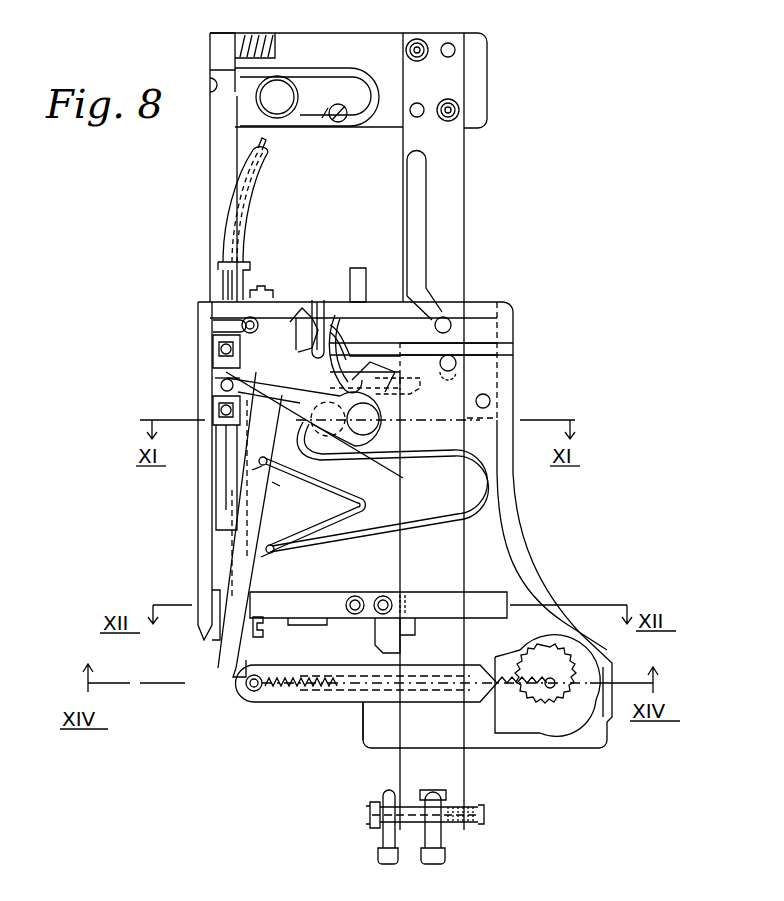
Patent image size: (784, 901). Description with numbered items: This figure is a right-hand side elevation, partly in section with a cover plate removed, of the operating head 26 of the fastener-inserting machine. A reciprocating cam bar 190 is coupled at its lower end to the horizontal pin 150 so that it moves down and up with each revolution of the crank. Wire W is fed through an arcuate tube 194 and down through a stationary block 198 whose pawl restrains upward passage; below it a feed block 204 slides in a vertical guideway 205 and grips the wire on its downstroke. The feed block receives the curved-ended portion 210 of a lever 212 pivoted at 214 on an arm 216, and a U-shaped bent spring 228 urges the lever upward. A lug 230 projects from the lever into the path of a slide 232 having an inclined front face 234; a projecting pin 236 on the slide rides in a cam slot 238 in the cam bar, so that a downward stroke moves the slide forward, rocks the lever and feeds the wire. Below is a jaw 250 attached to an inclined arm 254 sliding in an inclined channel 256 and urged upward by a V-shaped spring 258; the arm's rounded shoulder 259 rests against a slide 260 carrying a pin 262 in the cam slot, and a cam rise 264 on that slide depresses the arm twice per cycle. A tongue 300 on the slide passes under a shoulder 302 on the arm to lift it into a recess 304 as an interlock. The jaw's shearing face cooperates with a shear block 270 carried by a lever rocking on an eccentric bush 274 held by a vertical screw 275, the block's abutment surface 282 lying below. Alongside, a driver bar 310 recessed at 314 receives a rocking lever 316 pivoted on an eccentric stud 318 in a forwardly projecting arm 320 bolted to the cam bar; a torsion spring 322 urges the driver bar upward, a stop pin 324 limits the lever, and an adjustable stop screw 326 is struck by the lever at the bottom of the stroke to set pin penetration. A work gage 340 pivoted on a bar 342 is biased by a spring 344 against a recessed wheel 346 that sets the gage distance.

The operating head 26 is at (522, 408).
The horizontal pin 150 is at (488, 815).
The reciprocating cam bar 190 is at (454, 147).
The arcuate tube 194 is at (259, 190).
The stationary block 198 is at (219, 350).
The feed block 204 is at (219, 411).
The vertical guideway 205 is at (216, 478).
The curved-ended portion 210 is at (220, 386).
The lever 212 is at (279, 520).
The pivot 214 is at (380, 437).
The arm 216 is at (387, 466).
The U-shaped bent spring 228 is at (322, 458).
The lug 230 is at (338, 345).
The slide 232 is at (384, 375).
The inclined front face 234 is at (408, 393).
The projecting pin 236 is at (505, 358).
The cam slot 238 is at (430, 366).
The jaw 250 is at (215, 543).
The inclined arm 254 is at (273, 483).
The inclined channel 256 is at (268, 537).
The V-shaped spring 258 is at (312, 505).
The rounded shoulder 259 is at (269, 328).
The slide 260 is at (312, 316).
The pin 262 is at (444, 317).
The cam rise 264 is at (303, 302).
The shear block 270 is at (216, 656).
The eccentric bush 274 is at (292, 636).
The vertical screw 275 is at (318, 624).
The abutment surface 282 is at (238, 676).
The tongue 300 is at (343, 344).
The shoulder 302 is at (290, 352).
The recess 304 is at (352, 380).
The driver bar 310 is at (210, 206).
The recess 314 is at (213, 85).
The rocking lever 316 is at (344, 102).
The stud 318 is at (292, 106).
The forwardly projecting arm 320 is at (384, 62).
The torsion spring 322 is at (263, 33).
The stop pin 324 is at (330, 122).
The adjustable stop screw 326 is at (358, 266).
The work gage 340 is at (250, 690).
The bar 342 is at (385, 702).
The spring 344 is at (300, 704).
The wheel 346 is at (562, 721).
The wire W is at (268, 146).